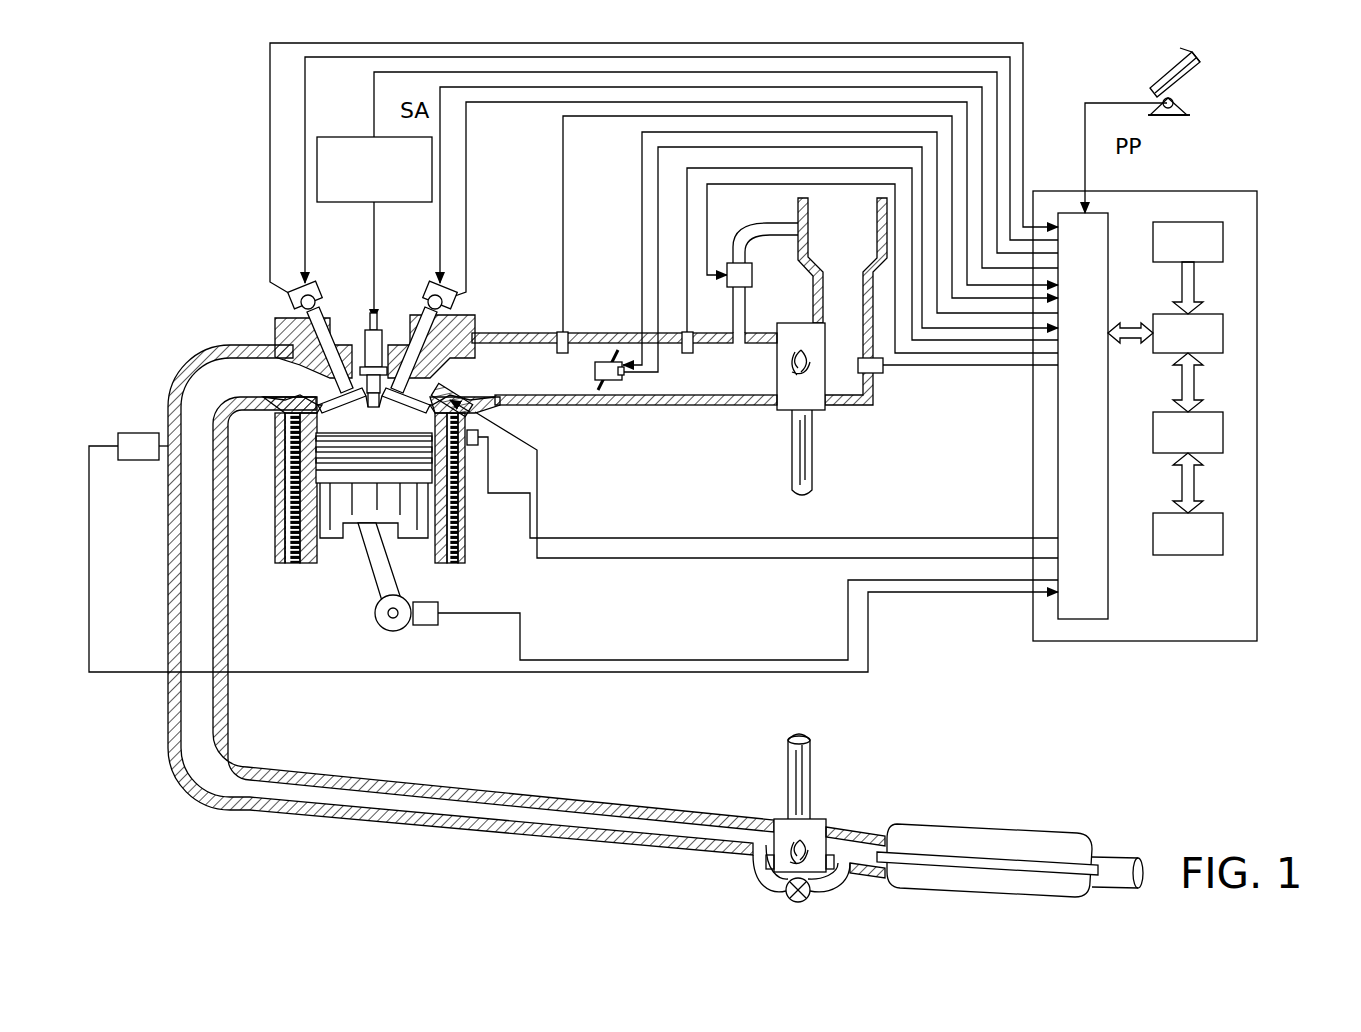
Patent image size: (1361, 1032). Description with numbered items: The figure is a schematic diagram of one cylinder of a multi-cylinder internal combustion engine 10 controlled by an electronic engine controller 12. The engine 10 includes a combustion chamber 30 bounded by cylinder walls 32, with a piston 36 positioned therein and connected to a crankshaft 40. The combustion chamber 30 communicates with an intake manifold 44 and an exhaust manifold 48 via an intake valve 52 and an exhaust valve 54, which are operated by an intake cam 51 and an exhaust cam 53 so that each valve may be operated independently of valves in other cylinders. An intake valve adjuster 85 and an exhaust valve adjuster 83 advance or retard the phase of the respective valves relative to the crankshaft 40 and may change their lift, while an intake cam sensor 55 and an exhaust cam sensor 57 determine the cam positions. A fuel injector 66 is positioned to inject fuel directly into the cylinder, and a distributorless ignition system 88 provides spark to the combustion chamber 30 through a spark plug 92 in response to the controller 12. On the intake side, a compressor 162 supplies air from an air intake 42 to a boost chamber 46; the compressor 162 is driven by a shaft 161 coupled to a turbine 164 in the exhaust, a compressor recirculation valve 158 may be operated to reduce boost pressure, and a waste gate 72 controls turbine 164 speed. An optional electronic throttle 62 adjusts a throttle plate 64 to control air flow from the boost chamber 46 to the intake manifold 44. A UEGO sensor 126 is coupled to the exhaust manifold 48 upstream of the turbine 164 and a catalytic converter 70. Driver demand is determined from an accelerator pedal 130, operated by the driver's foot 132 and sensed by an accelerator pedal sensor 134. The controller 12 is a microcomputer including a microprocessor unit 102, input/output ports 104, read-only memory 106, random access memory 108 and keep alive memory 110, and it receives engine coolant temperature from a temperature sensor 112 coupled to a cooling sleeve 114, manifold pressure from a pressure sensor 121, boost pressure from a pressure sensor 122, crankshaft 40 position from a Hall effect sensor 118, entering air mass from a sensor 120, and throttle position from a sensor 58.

The internal combustion engine 10 is at (212, 268).
The electronic engine controller 12 is at (1250, 192).
The combustion chamber 30 is at (373, 418).
The cylinder walls 32 is at (313, 560).
The piston 36 is at (355, 520).
The crankshaft 40 is at (385, 630).
The air intake 42 is at (855, 248).
The intake manifold 44 is at (532, 384).
The boost chamber 46 is at (713, 386).
The exhaust manifold 48 is at (255, 390).
The intake cam 51 is at (428, 292).
The intake valve 52 is at (415, 395).
The exhaust cam 53 is at (318, 292).
The exhaust valve 54 is at (285, 352).
The intake cam sensor 55 is at (455, 298).
The exhaust cam sensor 57 is at (292, 298).
The throttle position sensor 58 is at (624, 380).
The electronic throttle 62 is at (568, 338).
The throttle plate 64 is at (612, 350).
The fuel injector 66 is at (478, 428).
The catalytic converter 70 is at (887, 885).
The waste gate 72 is at (786, 893).
The exhaust valve adjuster 83 is at (316, 300).
The intake valve adjuster 85 is at (443, 305).
The distributorless ignition system 88 is at (330, 137).
The spark plug 92 is at (385, 330).
The microprocessor unit 102 is at (1223, 340).
The input/output ports 104 is at (1108, 212).
The read-only memory 106 is at (1223, 238).
The random access memory 108 is at (1223, 437).
The keep alive memory 110 is at (1223, 538).
The temperature sensor 112 is at (476, 447).
The cooling sleeve 114 is at (460, 540).
The Hall effect sensor 118 is at (425, 628).
The air mass sensor 120 is at (883, 370).
The pressure sensor 121 is at (553, 332).
The pressure sensor 122 is at (706, 324).
The UEGO sensor 126 is at (118, 436).
The accelerator pedal 130 is at (1163, 100).
The driver's foot 132 is at (1200, 60).
The accelerator pedal sensor 134 is at (1190, 104).
The compressor recirculation valve 158 is at (752, 272).
The shaft 161 is at (792, 420).
The compressor 162 is at (798, 323).
The turbine 164 is at (774, 820).